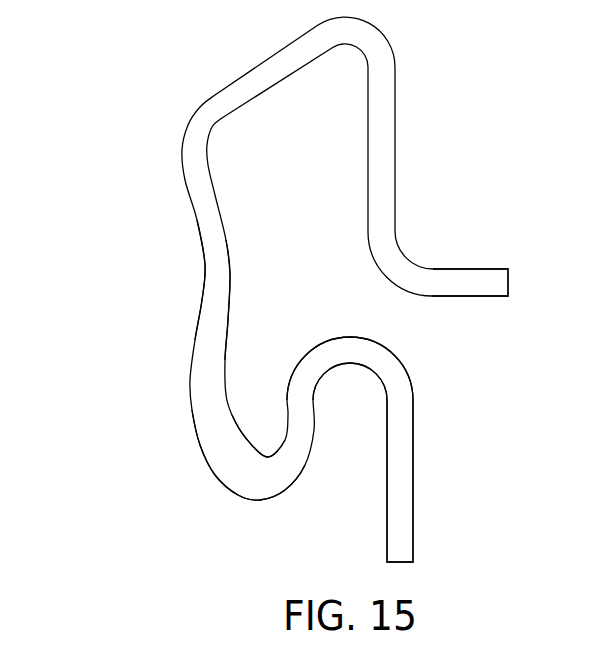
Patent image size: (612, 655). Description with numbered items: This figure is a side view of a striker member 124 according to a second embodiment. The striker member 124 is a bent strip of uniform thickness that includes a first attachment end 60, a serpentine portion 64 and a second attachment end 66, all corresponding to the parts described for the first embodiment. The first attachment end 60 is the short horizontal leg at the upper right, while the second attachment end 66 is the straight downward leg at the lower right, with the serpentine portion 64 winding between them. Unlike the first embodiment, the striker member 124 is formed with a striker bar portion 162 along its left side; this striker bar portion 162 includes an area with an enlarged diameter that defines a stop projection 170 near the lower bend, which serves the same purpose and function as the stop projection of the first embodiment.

The striker member 124 is at (167, 97).
The first attachment end 60 is at (478, 280).
The striker bar portion 162 is at (215, 295).
The stop projection 170 is at (218, 448).
The serpentine portion 64 is at (303, 426).
The second attachment end 66 is at (402, 510).